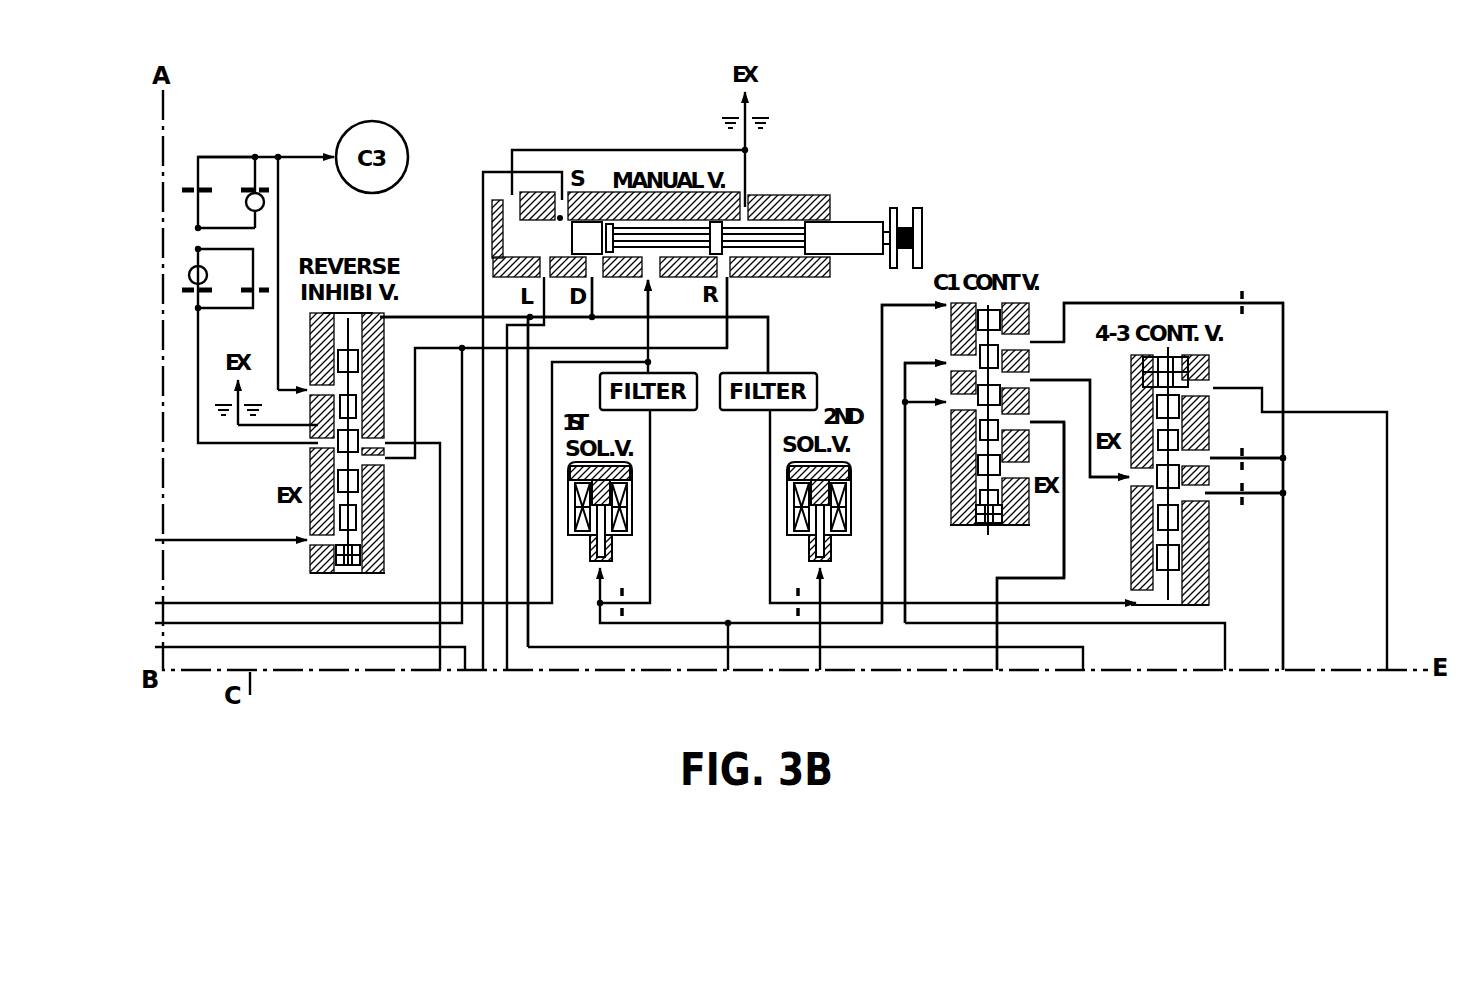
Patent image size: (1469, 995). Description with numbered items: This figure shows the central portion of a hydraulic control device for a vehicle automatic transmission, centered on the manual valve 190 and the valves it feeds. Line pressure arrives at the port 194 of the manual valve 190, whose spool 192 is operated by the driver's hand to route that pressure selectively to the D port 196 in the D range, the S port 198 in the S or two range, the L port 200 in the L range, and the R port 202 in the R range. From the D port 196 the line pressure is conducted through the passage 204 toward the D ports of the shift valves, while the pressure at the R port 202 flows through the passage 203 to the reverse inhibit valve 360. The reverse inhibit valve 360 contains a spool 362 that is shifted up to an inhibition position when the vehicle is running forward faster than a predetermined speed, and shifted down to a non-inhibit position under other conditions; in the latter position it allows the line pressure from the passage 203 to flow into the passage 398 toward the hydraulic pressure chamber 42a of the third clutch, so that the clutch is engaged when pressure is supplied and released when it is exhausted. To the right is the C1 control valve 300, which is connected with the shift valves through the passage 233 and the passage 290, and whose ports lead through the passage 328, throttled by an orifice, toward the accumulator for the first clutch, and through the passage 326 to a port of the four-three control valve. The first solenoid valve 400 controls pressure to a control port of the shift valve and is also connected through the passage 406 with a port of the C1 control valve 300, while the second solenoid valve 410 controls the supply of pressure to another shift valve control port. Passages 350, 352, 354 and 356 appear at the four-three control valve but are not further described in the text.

The hydraulic pressure chamber 42a is at (378, 127).
The manual valve 190 is at (845, 212).
The spool 192 is at (845, 257).
The port 194 is at (671, 298).
The D port 196 is at (601, 278).
The S port 198 is at (556, 195).
The L port 200 is at (545, 257).
The R port 202 is at (745, 265).
The passage 203 is at (768, 318).
The passage 204 is at (528, 497).
The passage 233 is at (1064, 533).
The passage 290 is at (908, 577).
The C1 control valve 300 is at (1040, 553).
The passage 326 is at (1098, 380).
The passage 328 is at (1286, 322).
The oil passage 350 is at (1250, 456).
The oil passage 352 is at (1283, 458).
The oil passage 354 is at (1255, 498).
The oil passage 356 is at (1283, 493).
The reverse inhibit valve 360 is at (312, 557).
The spool 362 is at (372, 470).
The passage 398 is at (200, 328).
The first solenoid valve 400 is at (634, 522).
The passage 406 is at (905, 306).
The second solenoid valve 410 is at (786, 545).